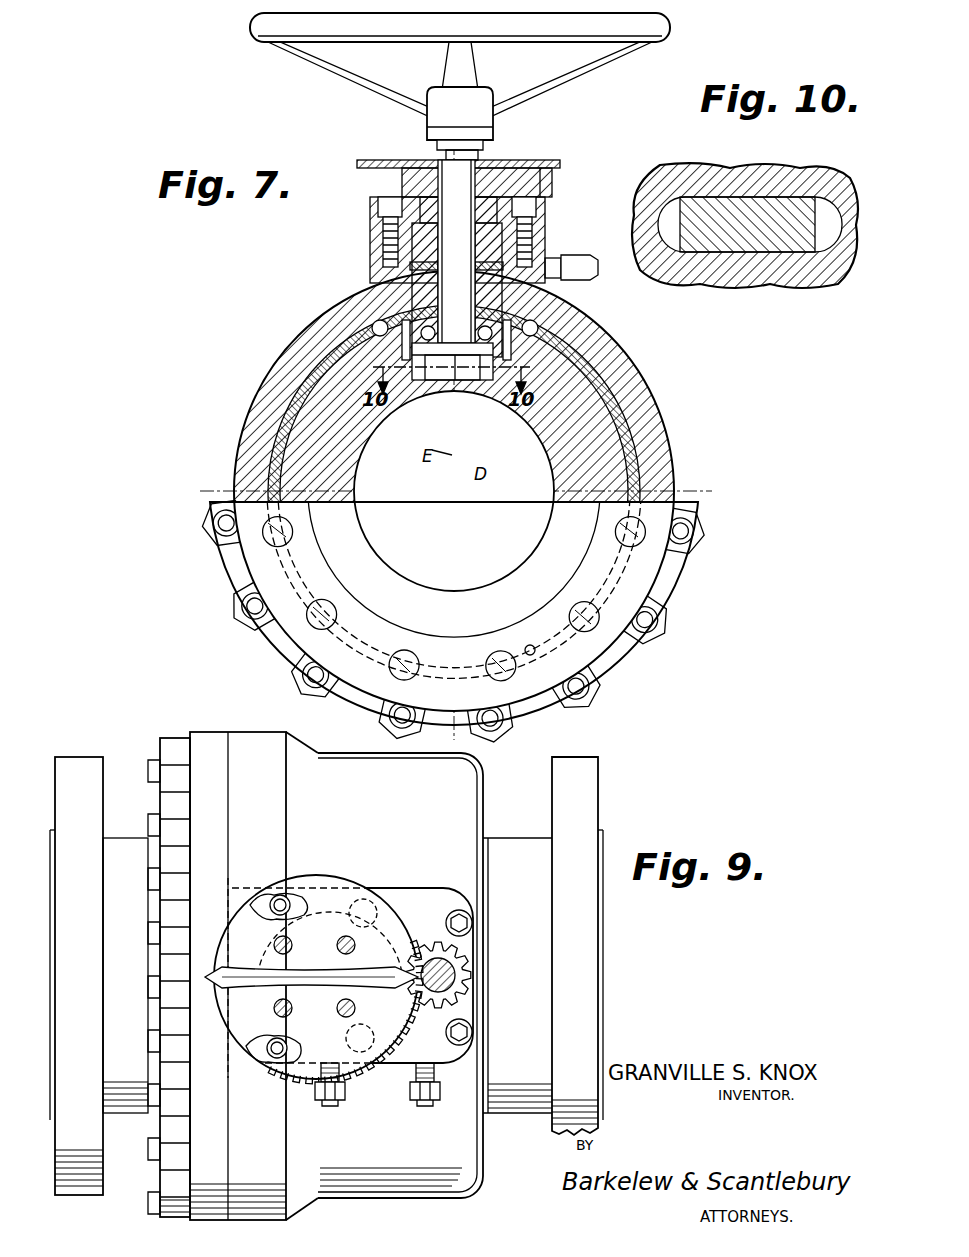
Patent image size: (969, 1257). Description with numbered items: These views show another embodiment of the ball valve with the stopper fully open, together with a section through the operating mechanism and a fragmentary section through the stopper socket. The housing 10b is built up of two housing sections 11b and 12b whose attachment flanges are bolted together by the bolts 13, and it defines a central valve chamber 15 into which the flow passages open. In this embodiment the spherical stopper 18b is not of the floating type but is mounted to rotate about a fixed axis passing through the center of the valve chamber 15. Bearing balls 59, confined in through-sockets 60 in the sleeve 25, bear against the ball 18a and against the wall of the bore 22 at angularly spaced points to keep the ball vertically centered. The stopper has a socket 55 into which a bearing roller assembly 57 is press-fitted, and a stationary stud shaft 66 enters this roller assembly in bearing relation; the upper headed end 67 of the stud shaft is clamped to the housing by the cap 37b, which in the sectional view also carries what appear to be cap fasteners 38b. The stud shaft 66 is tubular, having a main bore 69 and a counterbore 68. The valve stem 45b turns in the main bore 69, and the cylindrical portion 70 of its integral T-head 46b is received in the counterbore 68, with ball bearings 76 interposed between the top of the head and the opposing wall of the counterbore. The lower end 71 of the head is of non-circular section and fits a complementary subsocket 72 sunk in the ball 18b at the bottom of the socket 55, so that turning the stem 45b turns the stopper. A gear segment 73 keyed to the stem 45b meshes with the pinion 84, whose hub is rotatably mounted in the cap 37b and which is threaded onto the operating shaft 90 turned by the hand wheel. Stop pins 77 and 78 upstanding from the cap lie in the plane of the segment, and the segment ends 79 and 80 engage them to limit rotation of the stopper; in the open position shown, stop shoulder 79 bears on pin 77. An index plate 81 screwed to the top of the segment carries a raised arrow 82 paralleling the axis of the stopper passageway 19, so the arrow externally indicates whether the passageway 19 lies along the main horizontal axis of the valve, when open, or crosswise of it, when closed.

In FIG. 7, the valve body 10b is at (268, 378).
In FIG. 9, the valve body 10b is at (236, 728).
In FIG. 9, the pipe flange 11b is at (116, 834).
In FIG. 7, the body cover portion 12b is at (613, 356).
In FIG. 9, the body cover portion 12b is at (476, 1196).
In FIG. 9, the bolts 13 is at (166, 740).
In FIG. 7, the central valve chamber 15 is at (636, 438).
In FIG. 7, the ball 18a is at (358, 482).
In FIG. 10, the spherical stopper 18b is at (785, 272).
In FIG. 7, the stopper passageway 19 is at (512, 460).
In FIG. 7, the bore 22 is at (627, 380).
In FIG. 7, the sleeve 25 is at (640, 416).
In FIG. 7, the cap 37b is at (540, 212).
In FIG. 9, the cap 37b is at (448, 878).
In FIG. 9, the cap screws 38b is at (470, 914).
In FIG. 7, the valve stem 45b is at (457, 251).
In FIG. 7, the T-head 46b is at (454, 441).
In FIG. 7, the socket 55 is at (500, 368).
In FIG. 7, the bearing roller assembly 57 is at (545, 332).
In FIG. 7, the bearing balls 59 is at (380, 640).
In FIG. 7, the through-sockets 60 is at (372, 328).
In FIG. 7, the stationary stud shaft 66 is at (425, 302).
In FIG. 7, the headed end 67 is at (378, 230).
In FIG. 7, the counterbore 68 is at (490, 320).
In FIG. 7, the main bore 69 is at (401, 268).
In FIG. 7, the cylindrical portion 70 is at (470, 382).
In FIG. 7, the lower end 71 is at (466, 384).
In FIG. 10, the lower end 71 is at (800, 194).
In FIG. 7, the subsocket 72 is at (440, 384).
In FIG. 10, the subsocket 72 is at (686, 198).
In FIG. 7, the gear segment 73 is at (553, 182).
In FIG. 9, the gear segment 73 is at (372, 1078).
In FIG. 7, the ball bearings 76 is at (456, 338).
In FIG. 9, the stop pin 77 is at (264, 1072).
In FIG. 9, the stop pin 78 is at (272, 894).
In FIG. 9, the stop shoulder 79 is at (292, 1078).
In FIG. 9, the stop shoulder 80 is at (386, 908).
In FIG. 7, the index plate 81 is at (380, 160).
In FIG. 9, the index plate 81 is at (240, 1050).
In FIG. 7, the raised arrow 82 is at (490, 138).
In FIG. 9, the raised arrow 82 is at (274, 948).
In FIG. 9, the pinion 84 is at (472, 978).
In FIG. 9, the operating shaft 90 is at (448, 962).